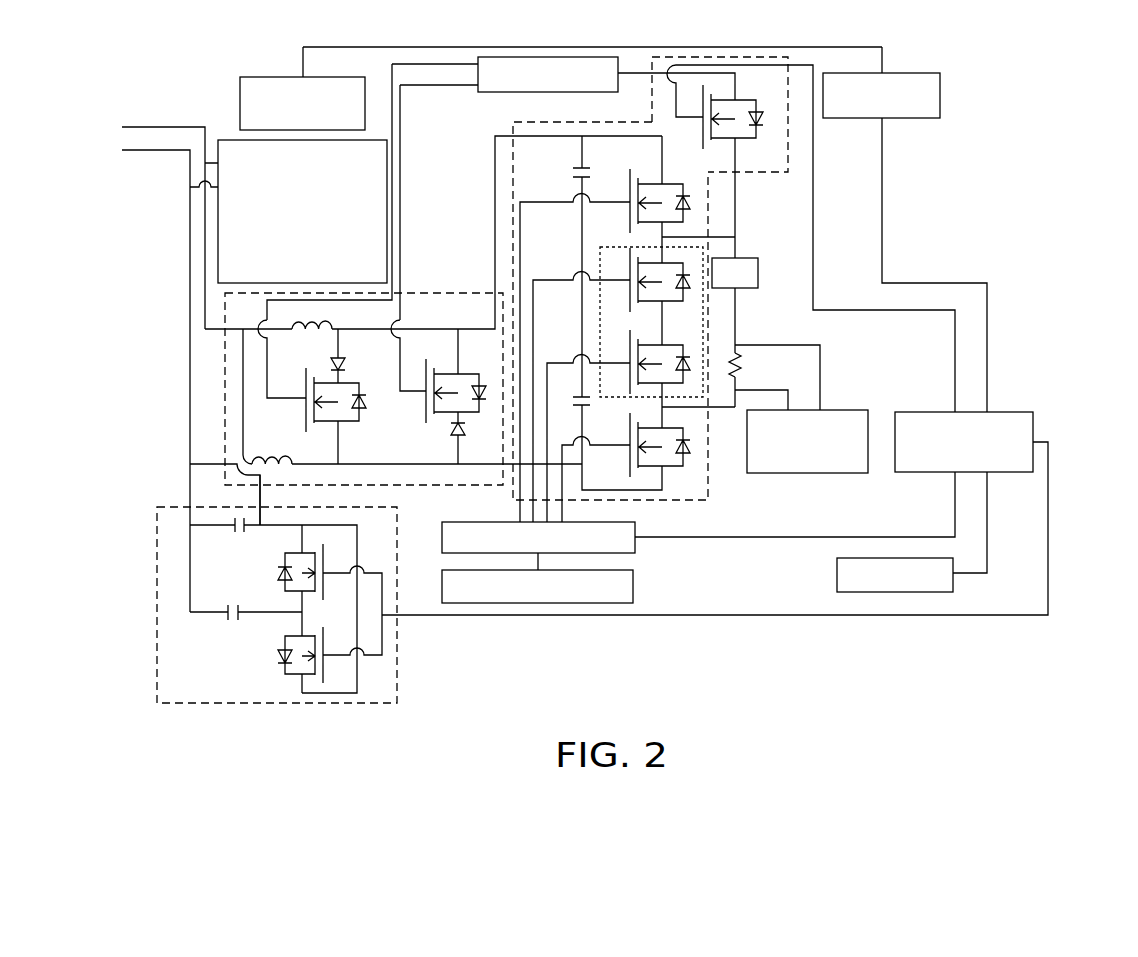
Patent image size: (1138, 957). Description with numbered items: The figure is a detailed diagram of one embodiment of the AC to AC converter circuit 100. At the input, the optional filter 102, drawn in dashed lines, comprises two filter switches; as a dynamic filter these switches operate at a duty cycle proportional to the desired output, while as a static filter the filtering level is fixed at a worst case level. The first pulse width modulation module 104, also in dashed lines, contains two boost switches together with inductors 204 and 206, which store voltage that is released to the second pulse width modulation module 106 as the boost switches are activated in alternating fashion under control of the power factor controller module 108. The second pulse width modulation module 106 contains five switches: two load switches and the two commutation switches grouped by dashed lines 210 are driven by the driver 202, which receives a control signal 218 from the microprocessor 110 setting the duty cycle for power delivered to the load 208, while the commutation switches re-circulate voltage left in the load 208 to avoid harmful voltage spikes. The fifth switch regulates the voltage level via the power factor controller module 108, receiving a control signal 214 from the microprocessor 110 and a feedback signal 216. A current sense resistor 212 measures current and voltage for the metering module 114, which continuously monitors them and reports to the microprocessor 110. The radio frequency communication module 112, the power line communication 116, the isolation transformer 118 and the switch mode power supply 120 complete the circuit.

The AC to AC converter circuit 100 is at (1008, 108).
The filter 102 is at (397, 655).
The first pulse width modulation module 104 is at (436, 293).
The second pulse width modulation module 106 is at (510, 170).
The power factor controller module 108 is at (493, 93).
The microprocessor 110 is at (930, 473).
The radio frequency communication module 112 is at (837, 575).
The metering module 114 is at (808, 474).
The power line communication 116 is at (908, 119).
The isolation transformer 118 is at (277, 77).
The switch mode power supply 120 is at (232, 140).
The driver 202 is at (483, 522).
The inductor 204 is at (277, 450).
The inductor 206 is at (333, 318).
The load 208 is at (743, 258).
The commutation switches 210 is at (707, 323).
The current sense resistor 212 is at (745, 363).
The control signal 214 is at (955, 368).
The feedback signal 216 is at (738, 203).
The control signal 218 is at (750, 538).